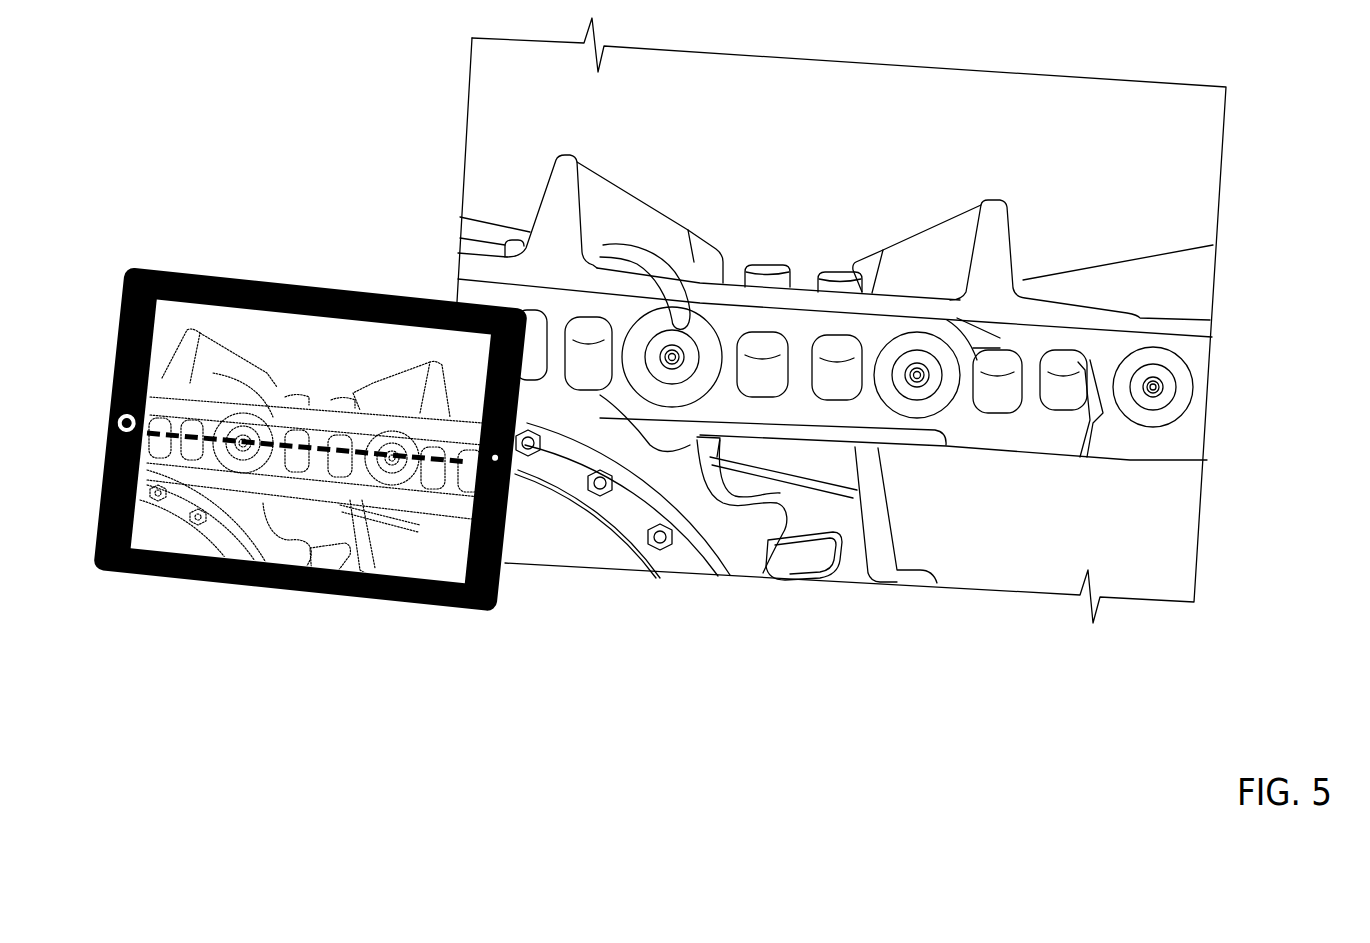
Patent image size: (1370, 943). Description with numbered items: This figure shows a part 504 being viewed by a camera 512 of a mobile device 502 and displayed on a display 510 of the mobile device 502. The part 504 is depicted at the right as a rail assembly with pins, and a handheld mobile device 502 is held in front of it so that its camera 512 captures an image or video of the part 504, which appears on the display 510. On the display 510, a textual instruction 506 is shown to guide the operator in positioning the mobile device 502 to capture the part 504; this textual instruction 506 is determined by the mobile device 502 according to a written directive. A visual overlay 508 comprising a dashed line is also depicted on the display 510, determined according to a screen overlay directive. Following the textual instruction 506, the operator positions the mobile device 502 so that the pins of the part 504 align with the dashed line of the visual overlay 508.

The mobile device 502 is at (184, 256).
The part 504 is at (563, 142).
The textual instruction 506 is at (300, 335).
The visual overlay 508 is at (293, 445).
The display 510 is at (432, 560).
The camera 512 is at (528, 480).